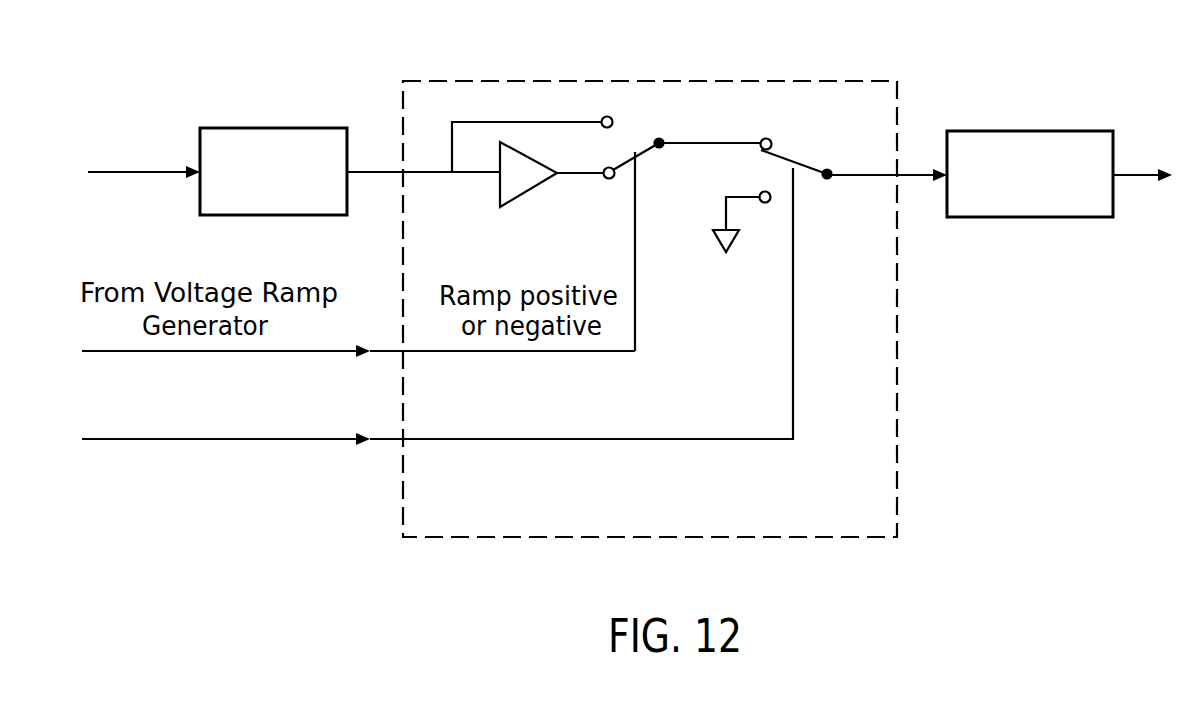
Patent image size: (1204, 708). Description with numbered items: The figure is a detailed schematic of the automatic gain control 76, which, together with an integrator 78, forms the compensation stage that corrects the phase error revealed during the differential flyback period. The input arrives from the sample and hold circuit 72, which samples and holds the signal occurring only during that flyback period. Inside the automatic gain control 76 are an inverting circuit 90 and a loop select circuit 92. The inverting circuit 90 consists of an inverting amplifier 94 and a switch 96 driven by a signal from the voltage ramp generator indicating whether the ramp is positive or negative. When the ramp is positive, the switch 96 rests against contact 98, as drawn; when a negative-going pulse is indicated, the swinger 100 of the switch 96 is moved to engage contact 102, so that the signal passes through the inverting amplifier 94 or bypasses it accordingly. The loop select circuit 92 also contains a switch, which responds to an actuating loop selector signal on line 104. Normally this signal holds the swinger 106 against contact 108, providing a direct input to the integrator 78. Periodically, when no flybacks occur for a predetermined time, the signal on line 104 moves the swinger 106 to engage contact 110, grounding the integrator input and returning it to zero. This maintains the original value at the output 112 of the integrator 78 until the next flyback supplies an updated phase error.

The sample and hold circuit 72 is at (281, 128).
The automatic gain control 76 is at (898, 402).
The integrator 78 is at (1009, 131).
The inverting circuit 90 is at (531, 106).
The loop select circuit 92 is at (800, 94).
The inverting amplifier 94 is at (530, 192).
The switch 96 is at (655, 94).
The contact 98 is at (609, 179).
The swinger 100 is at (660, 150).
The contact 102 is at (607, 116).
The line 104 is at (793, 396).
The swinger 106 is at (786, 157).
The contact 108 is at (764, 137).
The contact 110 is at (768, 203).
The output 112 is at (1133, 175).